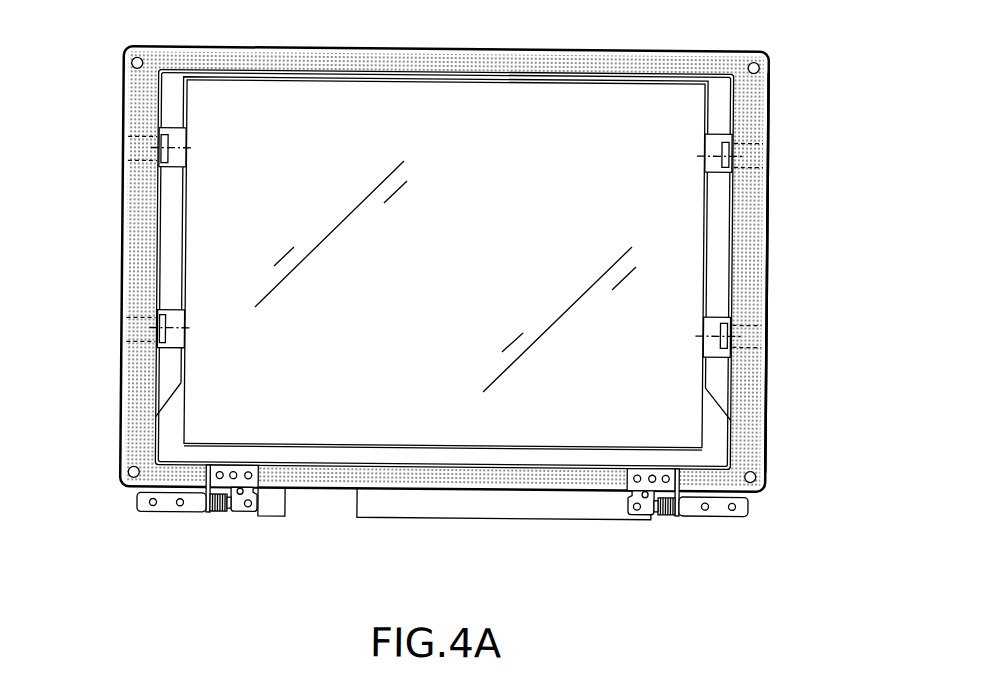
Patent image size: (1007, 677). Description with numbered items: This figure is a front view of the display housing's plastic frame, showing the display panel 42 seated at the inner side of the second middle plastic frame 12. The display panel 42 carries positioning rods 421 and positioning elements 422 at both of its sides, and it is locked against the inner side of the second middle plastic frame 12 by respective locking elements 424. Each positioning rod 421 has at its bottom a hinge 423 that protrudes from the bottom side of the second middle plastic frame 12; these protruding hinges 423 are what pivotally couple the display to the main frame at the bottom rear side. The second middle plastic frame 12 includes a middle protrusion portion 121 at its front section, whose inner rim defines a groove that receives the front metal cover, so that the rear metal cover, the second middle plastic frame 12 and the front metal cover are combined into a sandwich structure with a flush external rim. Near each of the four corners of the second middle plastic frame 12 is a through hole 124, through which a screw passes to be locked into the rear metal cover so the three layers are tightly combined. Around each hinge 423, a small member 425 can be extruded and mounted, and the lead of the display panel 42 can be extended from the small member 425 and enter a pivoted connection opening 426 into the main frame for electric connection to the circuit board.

The second middle plastic frame 12 is at (750, 215).
The middle protrusion portion 121 is at (768, 304).
The through holes 124 is at (136, 473).
The display panel 42 is at (462, 280).
The positioning rods 421 is at (183, 254).
The positioning elements 422 is at (176, 347).
The locking elements 424 is at (134, 150).
The hinge 423 is at (168, 510).
The small member 425 is at (276, 509).
The pivoted connection opening 426 is at (350, 502).